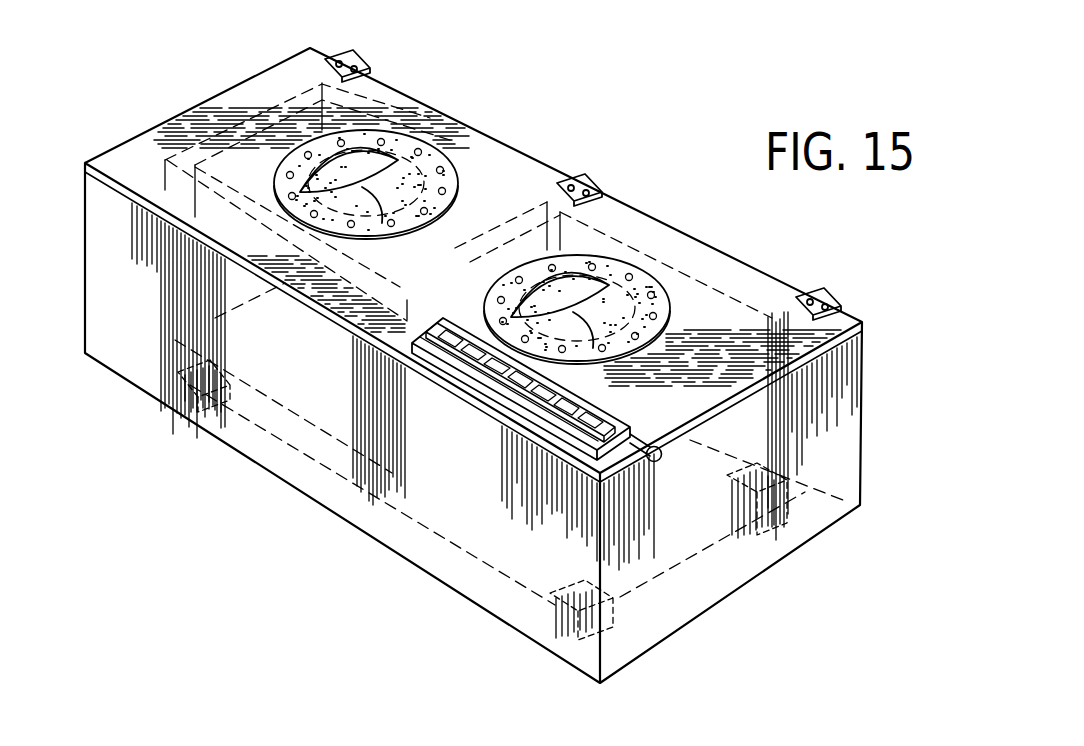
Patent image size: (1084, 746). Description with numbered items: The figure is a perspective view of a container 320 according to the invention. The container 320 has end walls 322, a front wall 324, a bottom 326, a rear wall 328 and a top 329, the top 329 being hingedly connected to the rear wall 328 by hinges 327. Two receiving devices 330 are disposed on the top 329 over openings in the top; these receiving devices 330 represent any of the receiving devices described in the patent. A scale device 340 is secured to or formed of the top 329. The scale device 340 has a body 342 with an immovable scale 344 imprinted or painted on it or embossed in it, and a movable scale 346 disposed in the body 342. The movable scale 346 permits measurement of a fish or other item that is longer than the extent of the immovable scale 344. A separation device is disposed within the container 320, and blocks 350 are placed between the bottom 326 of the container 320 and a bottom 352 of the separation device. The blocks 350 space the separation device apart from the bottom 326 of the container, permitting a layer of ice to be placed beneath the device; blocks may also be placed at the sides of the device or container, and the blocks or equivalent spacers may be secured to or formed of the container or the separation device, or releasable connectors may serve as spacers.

The container 320 is at (527, 159).
The end walls 322 is at (173, 118).
The front wall 324 is at (143, 377).
The bottom 326 is at (483, 604).
The hinges 327 is at (366, 60).
The rear wall 328 is at (745, 295).
The top 329 is at (318, 60).
The receiving devices 330 is at (428, 140).
The scale device 340 is at (521, 389).
The body 342 is at (450, 263).
The immovable scale 344 is at (547, 390).
The movable scale 346 is at (625, 395).
The blocks 350 is at (262, 215).
The bottom 352 is at (340, 458).